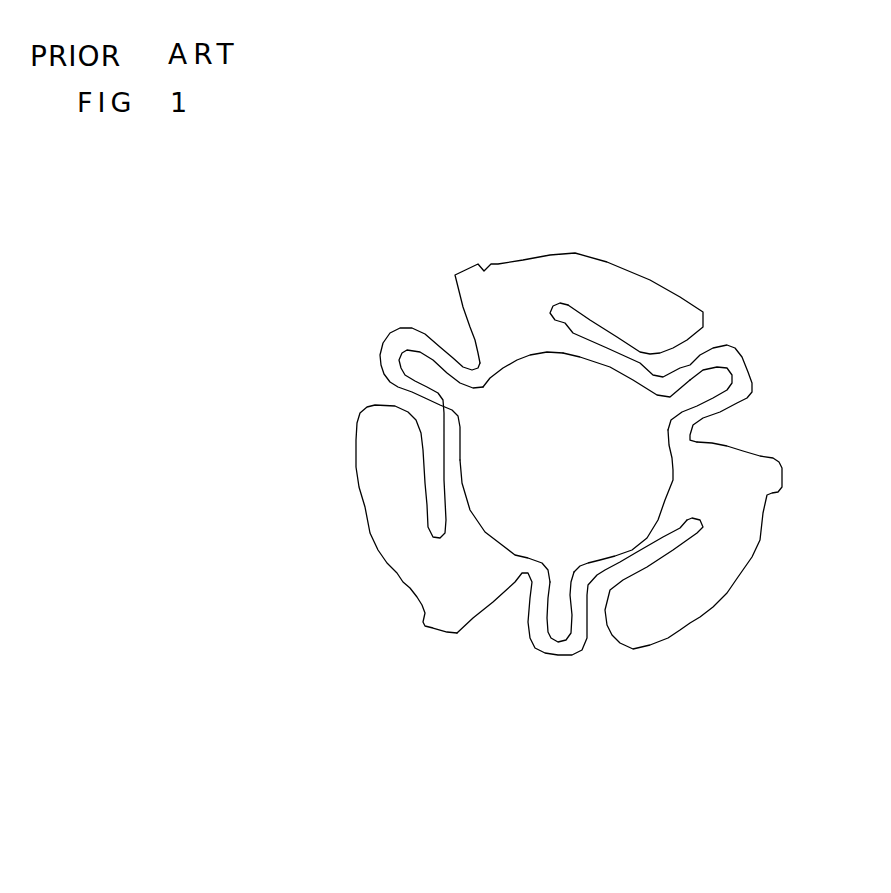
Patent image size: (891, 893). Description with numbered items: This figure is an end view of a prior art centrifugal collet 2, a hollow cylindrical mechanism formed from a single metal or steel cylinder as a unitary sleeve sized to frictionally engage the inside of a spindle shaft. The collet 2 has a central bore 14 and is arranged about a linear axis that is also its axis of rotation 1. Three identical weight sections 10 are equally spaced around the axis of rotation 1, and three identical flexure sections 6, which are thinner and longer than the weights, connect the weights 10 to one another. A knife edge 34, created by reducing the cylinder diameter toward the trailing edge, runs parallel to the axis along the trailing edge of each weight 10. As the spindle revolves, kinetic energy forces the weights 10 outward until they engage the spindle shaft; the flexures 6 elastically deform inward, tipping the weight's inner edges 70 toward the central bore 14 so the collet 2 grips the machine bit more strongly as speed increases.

The axis of rotation 1 is at (565, 452).
The prior art centrifugal collet 2 is at (208, 663).
The flexure section 6 is at (740, 380).
The weight section 10 is at (707, 573).
The central bore 14 is at (593, 513).
The knife edge 34 is at (491, 264).
The inner edge of the weight 70 is at (505, 393).